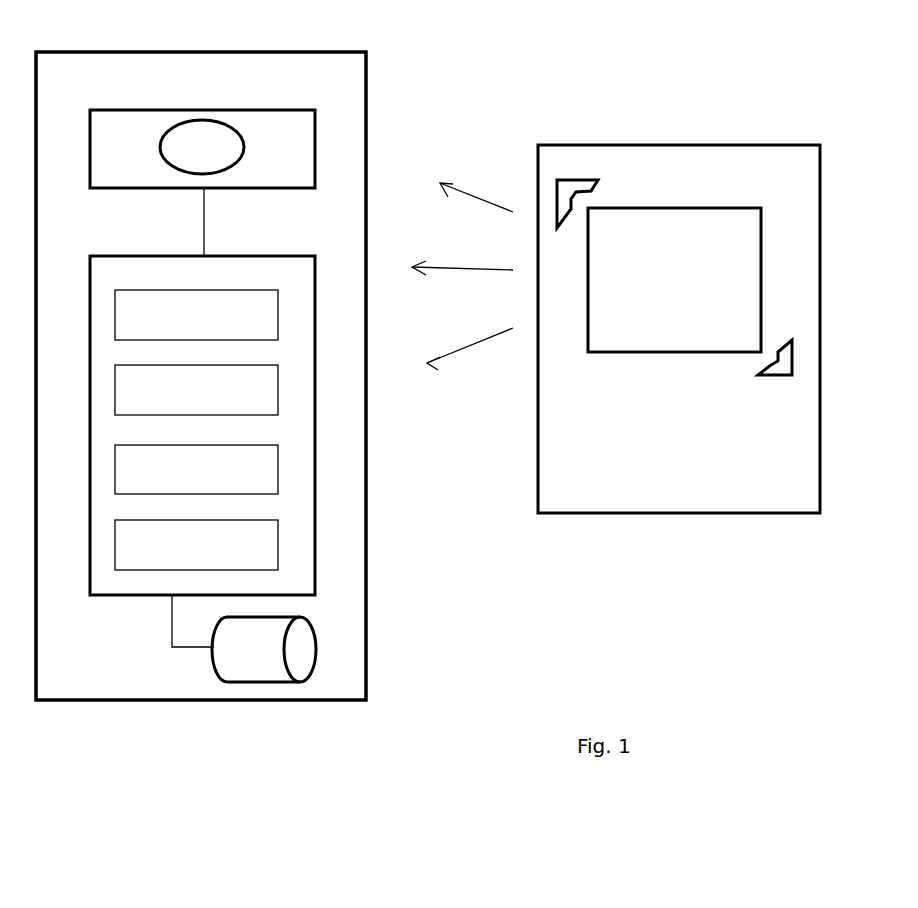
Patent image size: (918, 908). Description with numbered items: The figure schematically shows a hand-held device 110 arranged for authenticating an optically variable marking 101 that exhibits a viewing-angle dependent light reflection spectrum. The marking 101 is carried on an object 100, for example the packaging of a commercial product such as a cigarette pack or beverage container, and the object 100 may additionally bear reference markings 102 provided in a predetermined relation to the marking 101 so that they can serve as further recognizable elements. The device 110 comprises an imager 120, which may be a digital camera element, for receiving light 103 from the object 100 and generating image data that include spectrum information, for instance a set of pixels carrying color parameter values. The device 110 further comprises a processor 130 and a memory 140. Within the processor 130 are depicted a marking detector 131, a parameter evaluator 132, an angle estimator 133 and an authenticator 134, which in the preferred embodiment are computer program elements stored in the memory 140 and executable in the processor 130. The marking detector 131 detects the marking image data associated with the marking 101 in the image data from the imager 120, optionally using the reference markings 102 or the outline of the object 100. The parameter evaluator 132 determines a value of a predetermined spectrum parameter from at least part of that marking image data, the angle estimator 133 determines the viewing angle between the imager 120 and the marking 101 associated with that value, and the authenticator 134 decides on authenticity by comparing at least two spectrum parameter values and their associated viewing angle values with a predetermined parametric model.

The object 100 is at (693, 145).
The optically variable marking 101 is at (681, 307).
The reference markings 102 is at (578, 182).
The light 103 is at (475, 345).
The hand-held device 110 is at (132, 52).
The imager 120 is at (202, 172).
The processor 130 is at (202, 409).
The marking detector 131 is at (196, 315).
The parameter evaluator 132 is at (196, 390).
The angle estimator 133 is at (196, 469).
The authenticator 134 is at (196, 545).
The memory 140 is at (244, 638).